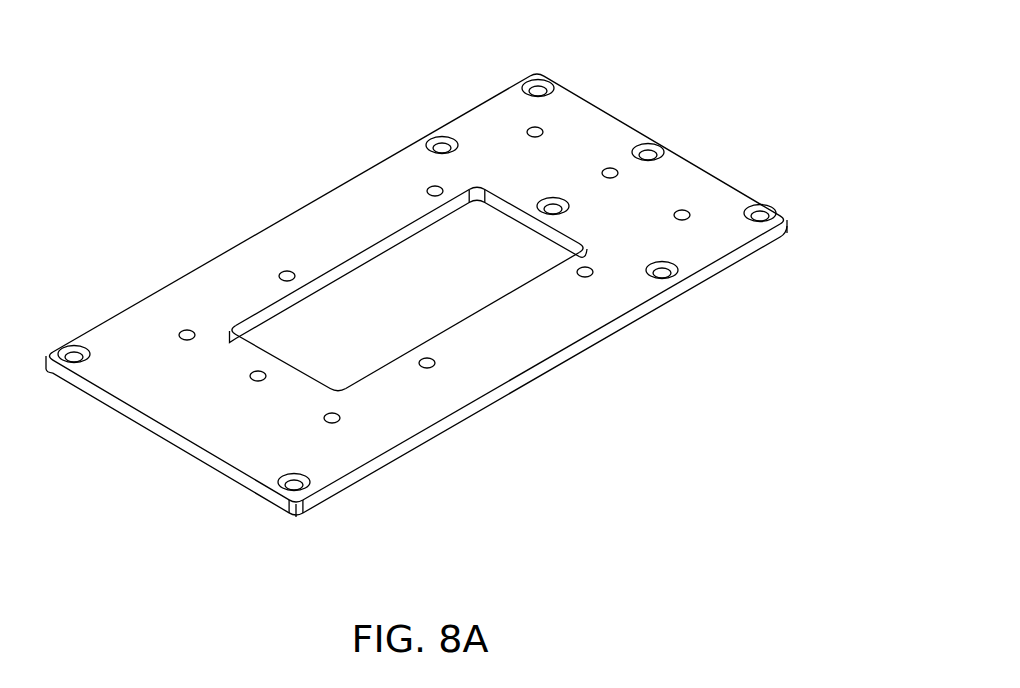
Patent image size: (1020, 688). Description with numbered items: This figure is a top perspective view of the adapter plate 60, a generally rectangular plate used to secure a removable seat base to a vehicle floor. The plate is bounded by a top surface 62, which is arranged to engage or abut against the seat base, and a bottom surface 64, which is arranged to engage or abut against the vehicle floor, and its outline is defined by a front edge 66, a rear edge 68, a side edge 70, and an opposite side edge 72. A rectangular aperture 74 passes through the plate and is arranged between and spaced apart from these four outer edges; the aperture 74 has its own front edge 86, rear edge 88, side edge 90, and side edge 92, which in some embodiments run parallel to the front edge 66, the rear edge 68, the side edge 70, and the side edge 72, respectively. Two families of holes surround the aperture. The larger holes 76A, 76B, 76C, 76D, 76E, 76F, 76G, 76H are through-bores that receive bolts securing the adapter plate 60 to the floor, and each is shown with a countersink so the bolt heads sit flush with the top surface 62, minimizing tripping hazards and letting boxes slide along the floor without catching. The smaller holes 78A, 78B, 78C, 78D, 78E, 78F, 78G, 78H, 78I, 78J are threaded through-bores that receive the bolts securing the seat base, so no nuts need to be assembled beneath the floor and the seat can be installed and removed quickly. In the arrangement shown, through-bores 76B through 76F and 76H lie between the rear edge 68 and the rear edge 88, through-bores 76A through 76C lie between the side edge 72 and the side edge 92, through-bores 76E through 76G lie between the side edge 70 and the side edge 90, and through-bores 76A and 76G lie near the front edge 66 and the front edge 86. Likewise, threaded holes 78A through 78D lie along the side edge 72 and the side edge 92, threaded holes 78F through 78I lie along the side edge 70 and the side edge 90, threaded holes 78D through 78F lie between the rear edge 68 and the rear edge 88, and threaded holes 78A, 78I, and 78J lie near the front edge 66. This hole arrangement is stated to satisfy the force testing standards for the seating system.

The adapter plate 60 is at (852, 85).
The top surface 62 is at (338, 188).
The bottom surface 64 is at (316, 507).
The front edge 66 is at (130, 410).
The rear edge 68 is at (725, 183).
The side edge 70 is at (410, 441).
The side edge 72 is at (218, 257).
The aperture 74 is at (480, 334).
The hole 76A is at (72, 362).
The hole 76B is at (442, 137).
The hole 76C is at (540, 80).
The hole 76D is at (650, 144).
The hole 76E is at (763, 205).
The hole 76F is at (663, 279).
The hole 76G is at (281, 513).
The hole 76H is at (553, 197).
The threaded hole 78A is at (185, 329).
The threaded hole 78B is at (285, 270).
The threaded hole 78C is at (434, 186).
The threaded hole 78D is at (534, 127).
The threaded hole 78E is at (611, 168).
The threaded hole 78F is at (683, 210).
The threaded hole 78G is at (586, 277).
The threaded hole 78H is at (429, 368).
The threaded hole 78I is at (334, 423).
The threaded hole 78J is at (256, 381).
The front edge 86 is at (300, 370).
The rear edge 88 is at (521, 217).
The side edge 90 is at (468, 327).
The side edge 92 is at (357, 261).